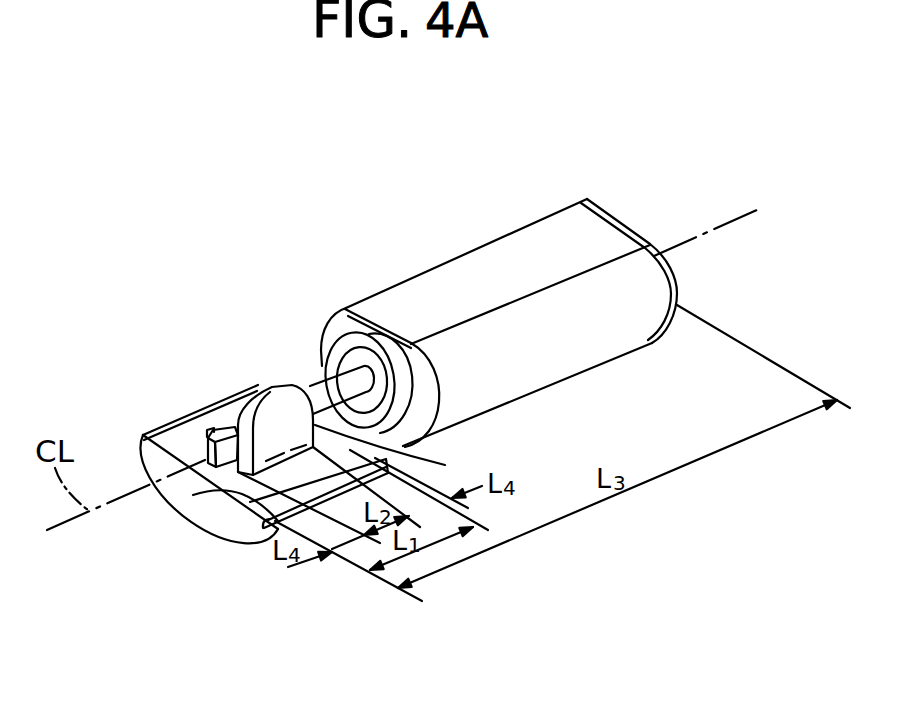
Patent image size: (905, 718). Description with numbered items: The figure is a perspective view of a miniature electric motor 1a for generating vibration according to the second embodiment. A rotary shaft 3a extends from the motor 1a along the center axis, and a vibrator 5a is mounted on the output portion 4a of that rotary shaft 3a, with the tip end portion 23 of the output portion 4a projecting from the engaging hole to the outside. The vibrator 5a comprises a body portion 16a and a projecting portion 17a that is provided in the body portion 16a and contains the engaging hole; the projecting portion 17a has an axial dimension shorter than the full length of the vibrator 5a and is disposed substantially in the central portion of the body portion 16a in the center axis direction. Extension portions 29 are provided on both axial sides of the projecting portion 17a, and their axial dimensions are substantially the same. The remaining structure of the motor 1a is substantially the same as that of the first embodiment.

The miniature electric motor 1a is at (452, 205).
The rotary shaft 3a is at (314, 375).
The projecting portion 17a is at (288, 380).
The output portion 4a is at (223, 426).
The tip end portion 23 is at (206, 435).
The vibrator 5a is at (196, 540).
The body portion 16a is at (231, 547).
The extension portions 29 is at (181, 522).